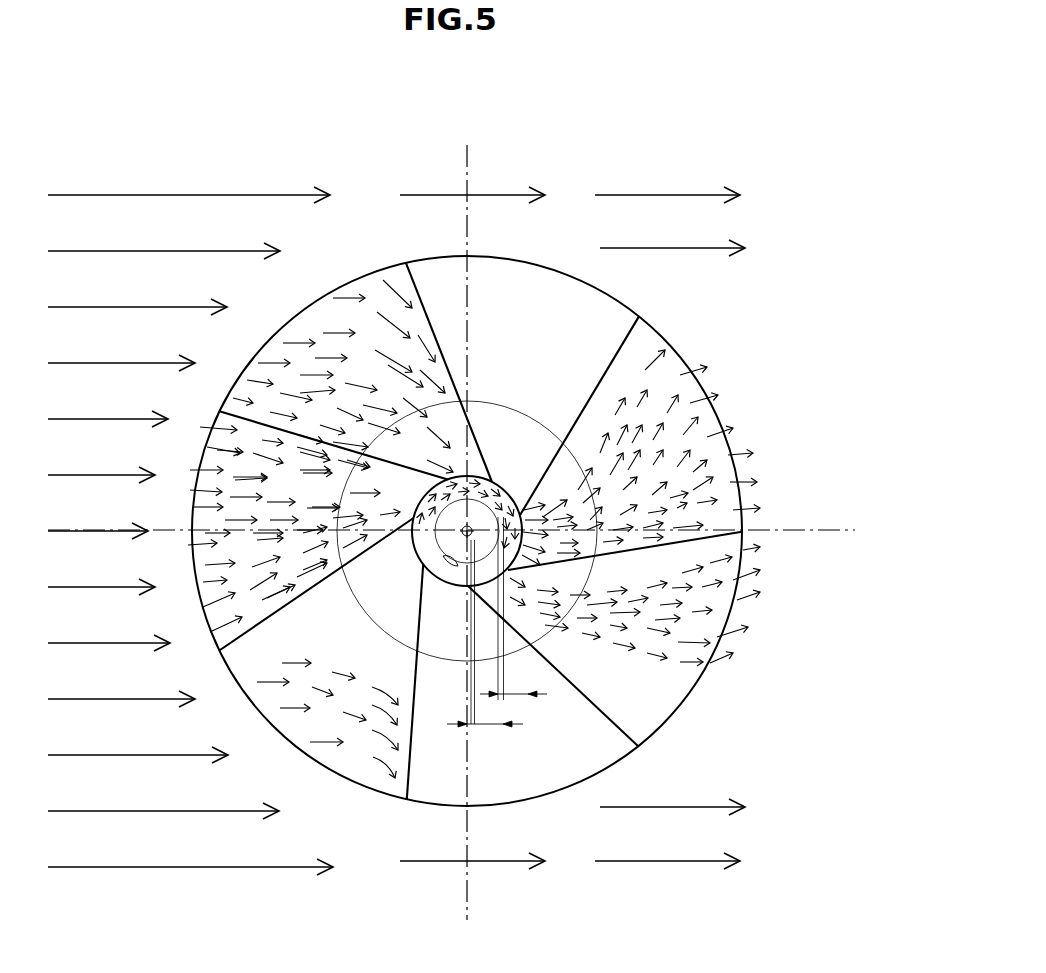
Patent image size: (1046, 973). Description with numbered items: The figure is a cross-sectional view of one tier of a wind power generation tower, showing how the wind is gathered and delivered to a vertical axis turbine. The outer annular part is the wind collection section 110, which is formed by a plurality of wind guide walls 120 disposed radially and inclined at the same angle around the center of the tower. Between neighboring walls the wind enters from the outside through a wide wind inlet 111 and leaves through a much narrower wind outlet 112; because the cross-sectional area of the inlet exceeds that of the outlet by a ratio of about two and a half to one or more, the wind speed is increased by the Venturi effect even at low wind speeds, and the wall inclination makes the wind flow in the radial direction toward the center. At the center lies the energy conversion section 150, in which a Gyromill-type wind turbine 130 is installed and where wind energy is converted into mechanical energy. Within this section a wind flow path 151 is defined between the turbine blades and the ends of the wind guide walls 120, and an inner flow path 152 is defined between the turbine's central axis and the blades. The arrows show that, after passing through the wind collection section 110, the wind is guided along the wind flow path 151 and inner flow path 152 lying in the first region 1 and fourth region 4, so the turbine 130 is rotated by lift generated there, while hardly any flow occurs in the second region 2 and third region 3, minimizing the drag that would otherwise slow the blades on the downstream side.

The wind collection section 110 is at (330, 115).
The wind inlet 111 is at (317, 302).
The wind outlet 112 is at (470, 472).
The wind guide walls 120 is at (287, 443).
The Gyromill-type wind turbine 130 is at (423, 590).
The energy conversion section 150 is at (545, 728).
The wind flow path 151 is at (513, 706).
The inner flow path 152 is at (485, 737).
The first region 1 is at (320, 456).
The second region 2 is at (322, 720).
The third region 3 is at (635, 656).
The fourth region 4 is at (651, 427).